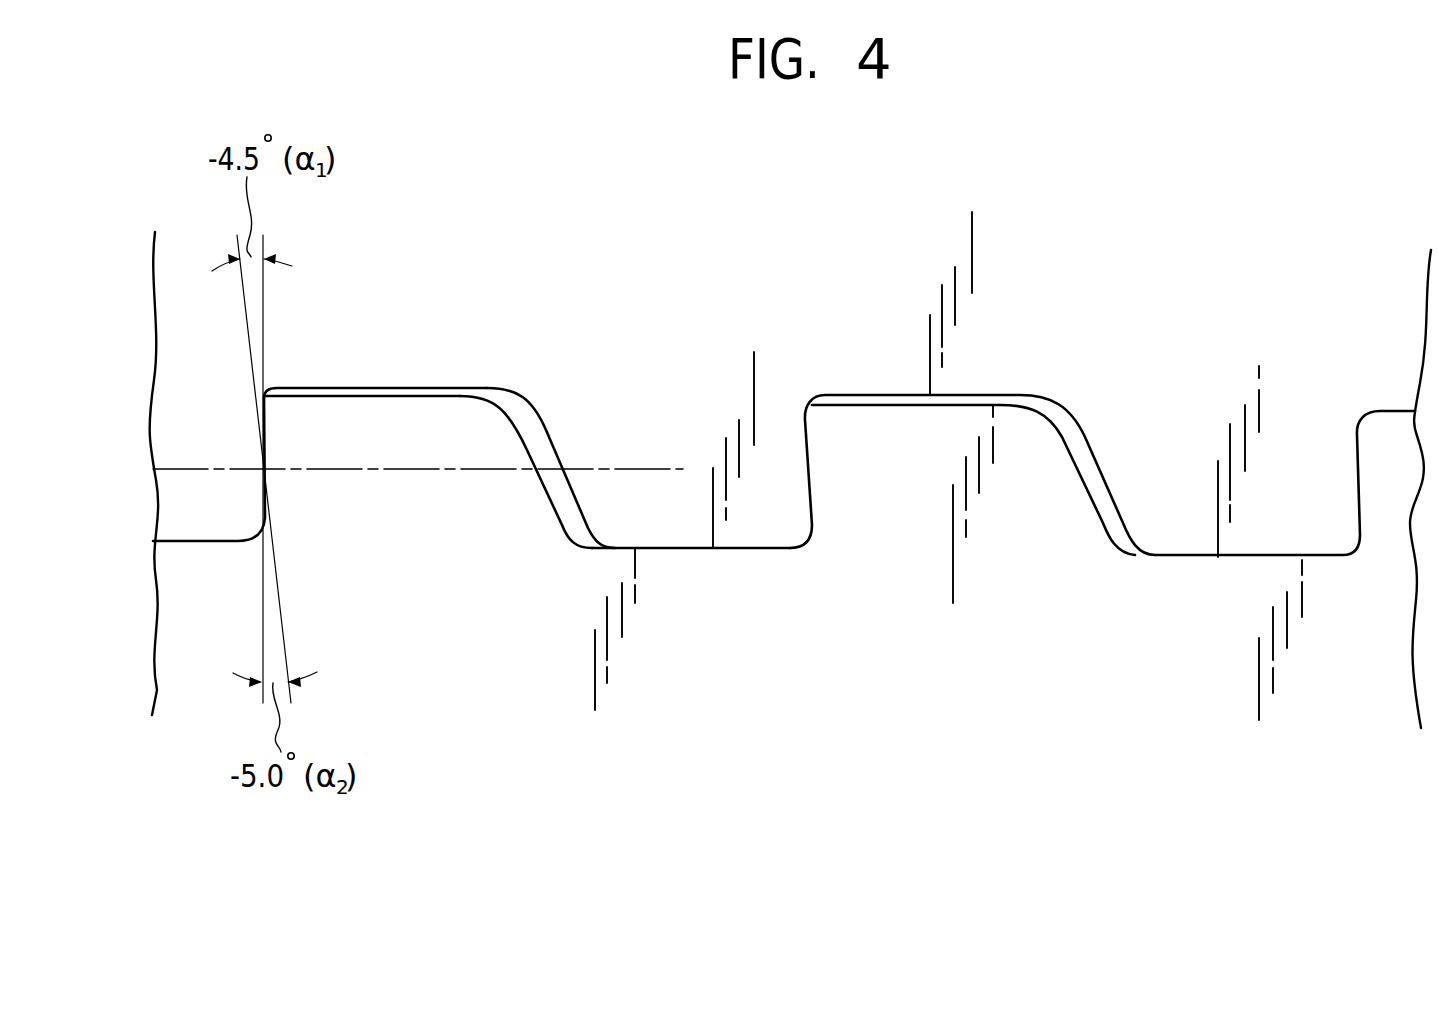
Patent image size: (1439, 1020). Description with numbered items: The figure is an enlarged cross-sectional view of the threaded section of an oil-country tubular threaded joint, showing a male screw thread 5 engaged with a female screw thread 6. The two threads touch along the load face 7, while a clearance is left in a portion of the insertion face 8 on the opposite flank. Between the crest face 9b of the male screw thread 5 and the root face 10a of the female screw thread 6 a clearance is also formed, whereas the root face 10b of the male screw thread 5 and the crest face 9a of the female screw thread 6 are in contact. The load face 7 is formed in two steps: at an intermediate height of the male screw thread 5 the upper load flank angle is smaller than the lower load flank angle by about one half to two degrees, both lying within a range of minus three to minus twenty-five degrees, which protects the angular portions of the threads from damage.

The male screw thread 5 is at (417, 437).
The female screw thread 6 is at (510, 360).
The load face 7 is at (262, 447).
The insertion face 8 is at (537, 462).
The crest face of the female screw thread 9a is at (677, 548).
The crest face of the male screw thread 9b is at (358, 397).
The root face of the female screw thread 10a is at (402, 388).
The root face of the male screw thread 10b is at (1061, 527).